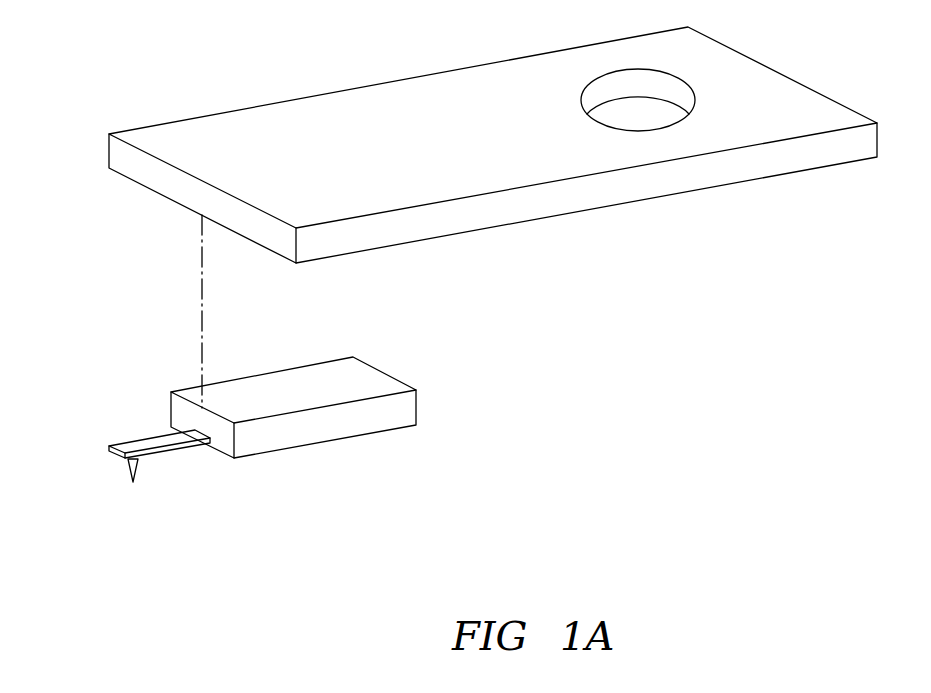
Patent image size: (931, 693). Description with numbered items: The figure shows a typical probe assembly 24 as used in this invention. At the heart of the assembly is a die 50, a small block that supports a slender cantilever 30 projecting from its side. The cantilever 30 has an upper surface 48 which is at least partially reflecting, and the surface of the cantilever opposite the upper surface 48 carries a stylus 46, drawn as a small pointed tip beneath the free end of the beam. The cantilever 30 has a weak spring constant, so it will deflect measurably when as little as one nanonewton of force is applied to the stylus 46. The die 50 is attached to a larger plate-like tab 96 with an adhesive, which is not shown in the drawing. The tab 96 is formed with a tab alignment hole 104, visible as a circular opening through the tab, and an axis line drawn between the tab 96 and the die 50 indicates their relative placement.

The probe assembly 24 is at (618, 377).
The cantilever 30 is at (108, 449).
The stylus 46 is at (138, 467).
The upper surface 48 is at (148, 443).
The die 50 is at (416, 406).
The tab 96 is at (560, 215).
The tab alignment hole 104 is at (668, 130).